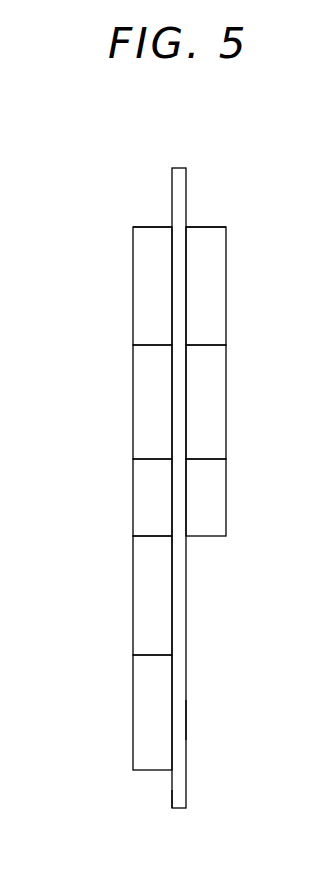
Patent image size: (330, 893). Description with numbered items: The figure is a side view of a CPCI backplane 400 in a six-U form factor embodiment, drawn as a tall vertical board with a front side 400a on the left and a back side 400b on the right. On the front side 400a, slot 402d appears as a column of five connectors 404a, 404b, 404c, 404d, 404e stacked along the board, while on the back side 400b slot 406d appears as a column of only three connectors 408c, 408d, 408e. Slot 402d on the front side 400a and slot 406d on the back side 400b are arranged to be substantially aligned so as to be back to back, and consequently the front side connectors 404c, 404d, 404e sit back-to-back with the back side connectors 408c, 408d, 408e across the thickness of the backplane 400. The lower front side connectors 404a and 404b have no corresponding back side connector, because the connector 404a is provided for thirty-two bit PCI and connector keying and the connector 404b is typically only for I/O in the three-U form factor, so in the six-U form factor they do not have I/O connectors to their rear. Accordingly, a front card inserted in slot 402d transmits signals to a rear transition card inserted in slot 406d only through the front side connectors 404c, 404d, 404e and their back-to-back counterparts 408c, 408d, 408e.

The backplane 400 is at (180, 168).
The front side 400a is at (172, 790).
The back side 400b is at (186, 720).
The slot 402d is at (150, 227).
The slot 406d is at (208, 227).
The connector 404a is at (133, 713).
The connector 404b is at (133, 578).
The connector 404c is at (133, 480).
The connector 404d is at (133, 385).
The connector 404e is at (133, 268).
The connector 408c is at (226, 480).
The connector 408d is at (226, 388).
The connector 408e is at (226, 270).